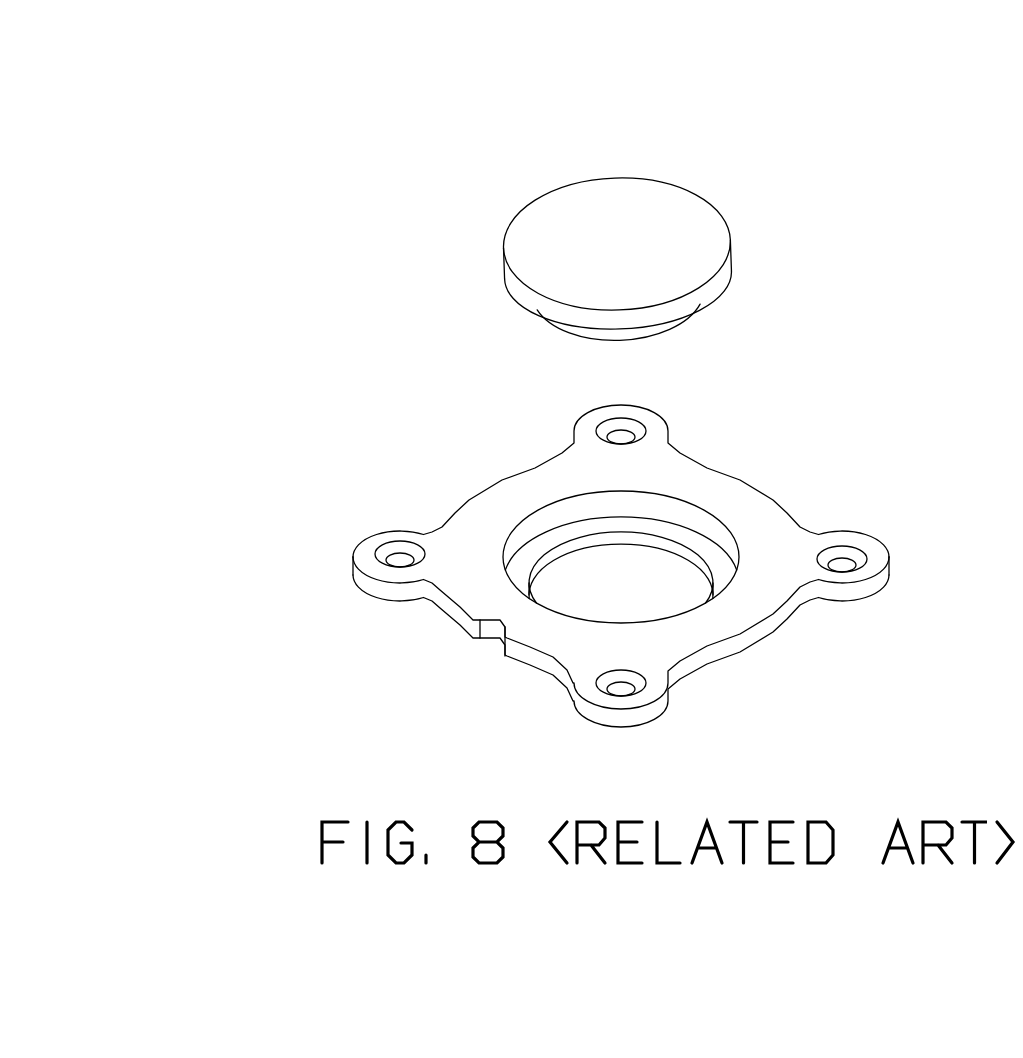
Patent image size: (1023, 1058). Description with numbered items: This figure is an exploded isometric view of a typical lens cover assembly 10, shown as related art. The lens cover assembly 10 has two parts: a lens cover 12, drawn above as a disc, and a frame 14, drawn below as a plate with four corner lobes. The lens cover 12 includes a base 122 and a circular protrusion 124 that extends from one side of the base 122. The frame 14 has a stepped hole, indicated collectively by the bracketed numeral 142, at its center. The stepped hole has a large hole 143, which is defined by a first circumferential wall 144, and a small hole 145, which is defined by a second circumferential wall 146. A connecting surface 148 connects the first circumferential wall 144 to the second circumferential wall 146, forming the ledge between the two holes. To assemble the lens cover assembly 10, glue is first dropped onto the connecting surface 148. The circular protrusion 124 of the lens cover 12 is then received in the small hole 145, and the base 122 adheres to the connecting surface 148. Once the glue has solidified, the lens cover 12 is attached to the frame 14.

The lens cover assembly 10 is at (649, 65).
The lens cover 12 is at (722, 191).
The base 122 is at (703, 253).
The circular protrusion 124 is at (655, 332).
The frame 14 is at (802, 506).
The receiving hole 142 is at (254, 502).
The large hole 143 is at (513, 547).
The first circumferential wall 144 is at (570, 510).
The small hole 145 is at (558, 585).
The second circumferential wall 146 is at (570, 547).
The connecting surface 148 is at (663, 532).